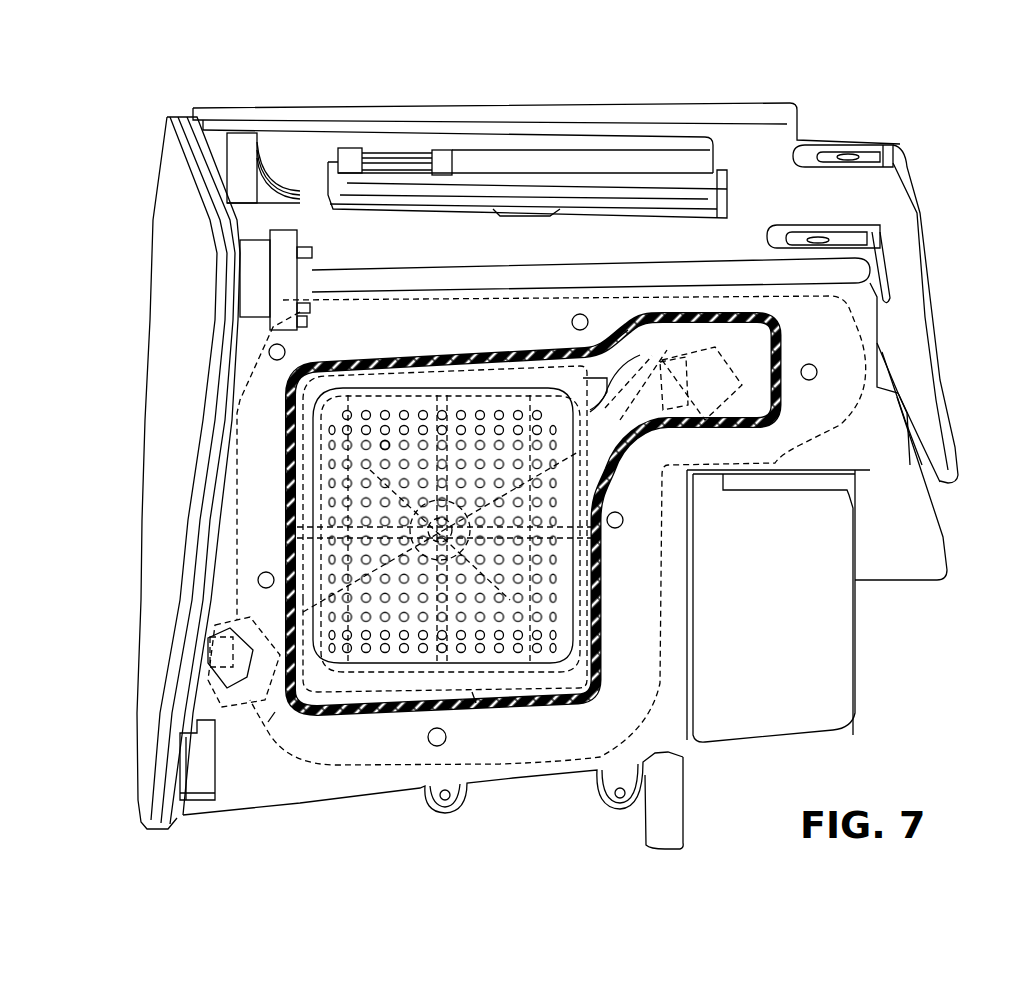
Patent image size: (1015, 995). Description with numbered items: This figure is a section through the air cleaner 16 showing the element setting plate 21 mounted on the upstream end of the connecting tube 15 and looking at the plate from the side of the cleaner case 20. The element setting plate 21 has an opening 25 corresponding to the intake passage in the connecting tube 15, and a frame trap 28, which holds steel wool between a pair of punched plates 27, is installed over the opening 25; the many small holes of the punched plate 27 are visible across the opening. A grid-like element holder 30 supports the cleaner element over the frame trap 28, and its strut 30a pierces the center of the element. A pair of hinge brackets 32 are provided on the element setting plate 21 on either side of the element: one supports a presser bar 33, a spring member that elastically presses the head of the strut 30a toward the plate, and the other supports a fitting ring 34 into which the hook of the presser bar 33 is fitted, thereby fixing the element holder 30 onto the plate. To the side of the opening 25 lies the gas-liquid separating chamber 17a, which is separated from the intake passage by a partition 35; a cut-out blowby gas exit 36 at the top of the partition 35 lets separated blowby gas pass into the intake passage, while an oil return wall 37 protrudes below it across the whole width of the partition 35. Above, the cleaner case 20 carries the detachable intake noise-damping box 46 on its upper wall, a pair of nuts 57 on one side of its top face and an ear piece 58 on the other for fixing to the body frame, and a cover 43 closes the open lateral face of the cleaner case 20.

The connecting tube 15 is at (496, 353).
The air cleaner 16 is at (745, 188).
The gas-liquid separating chamber 17a is at (702, 348).
The cleaner case 20 is at (288, 150).
The element setting plate 21 is at (662, 595).
The opening 25 is at (393, 660).
The punched plate 27 is at (432, 400).
The frame trap 28 is at (391, 420).
The element holder 30 is at (517, 696).
The strut 30a is at (472, 682).
The hinge bracket 32 is at (207, 676).
The presser bar 33 is at (273, 700).
The fitting ring 34 is at (248, 710).
The partition 35 is at (600, 408).
The blowby gas exit 36 is at (627, 332).
The oil return wall 37 is at (615, 367).
The cover 43 is at (158, 247).
The intake noise-damping box 46 is at (510, 160).
The nut 57 is at (853, 158).
The ear piece 58 is at (237, 140).